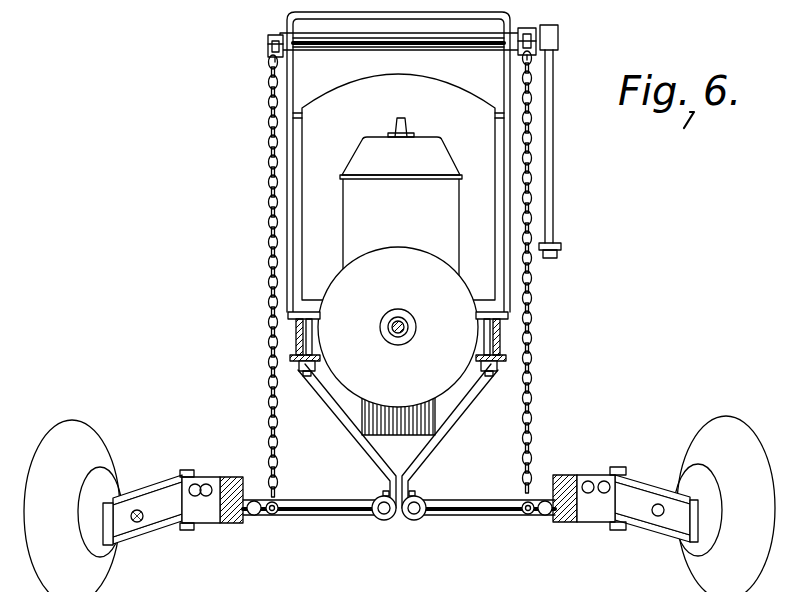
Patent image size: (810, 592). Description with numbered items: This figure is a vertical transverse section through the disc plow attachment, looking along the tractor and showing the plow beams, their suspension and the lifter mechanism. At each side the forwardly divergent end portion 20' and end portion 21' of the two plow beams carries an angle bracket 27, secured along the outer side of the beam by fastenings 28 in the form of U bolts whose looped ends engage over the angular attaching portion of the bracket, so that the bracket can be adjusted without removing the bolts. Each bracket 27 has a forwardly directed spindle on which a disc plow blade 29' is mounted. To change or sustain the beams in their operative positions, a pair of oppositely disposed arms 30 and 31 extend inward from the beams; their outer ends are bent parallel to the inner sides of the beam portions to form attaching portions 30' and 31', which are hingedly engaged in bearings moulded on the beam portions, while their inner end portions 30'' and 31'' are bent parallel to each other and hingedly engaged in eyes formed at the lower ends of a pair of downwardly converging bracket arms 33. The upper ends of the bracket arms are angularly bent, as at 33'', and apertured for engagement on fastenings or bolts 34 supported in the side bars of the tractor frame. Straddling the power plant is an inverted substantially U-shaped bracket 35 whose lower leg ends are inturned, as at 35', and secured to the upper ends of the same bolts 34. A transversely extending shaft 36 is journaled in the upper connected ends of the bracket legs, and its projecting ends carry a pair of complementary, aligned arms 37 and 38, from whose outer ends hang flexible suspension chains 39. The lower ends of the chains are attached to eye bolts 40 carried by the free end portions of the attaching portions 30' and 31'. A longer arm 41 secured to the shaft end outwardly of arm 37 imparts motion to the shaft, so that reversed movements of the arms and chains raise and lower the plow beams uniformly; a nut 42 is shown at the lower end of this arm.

The forwardly divergent end portion of plow beam 20' is at (575, 482).
The forwardly divergent end portion of plow beam 21' is at (237, 487).
The angle bracket 27 is at (150, 487).
The fastening 28 is at (630, 447).
The disc plow blade 29' is at (399, 494).
The arm 30 is at (484, 517).
The attaching portion 30' is at (553, 529).
The inner end portion 30'' is at (430, 520).
The arm 31 is at (313, 517).
The attaching portion 31' is at (253, 529).
The inner end portion 31'' is at (385, 525).
The bracket arm 33 is at (398, 436).
The angularly bent upper end 33'' is at (403, 367).
The fastening bolt 34 is at (296, 338).
The inverted U-shaped bracket 35 is at (403, 162).
The inturned portion 35' is at (407, 313).
The shaft 36 is at (474, 45).
The arm 37 is at (529, 30).
The arm 38 is at (275, 36).
The chain 39 is at (272, 190).
The eye bolt 40 is at (272, 515).
The longer arm 41 is at (548, 166).
The rod nut 42 is at (561, 247).